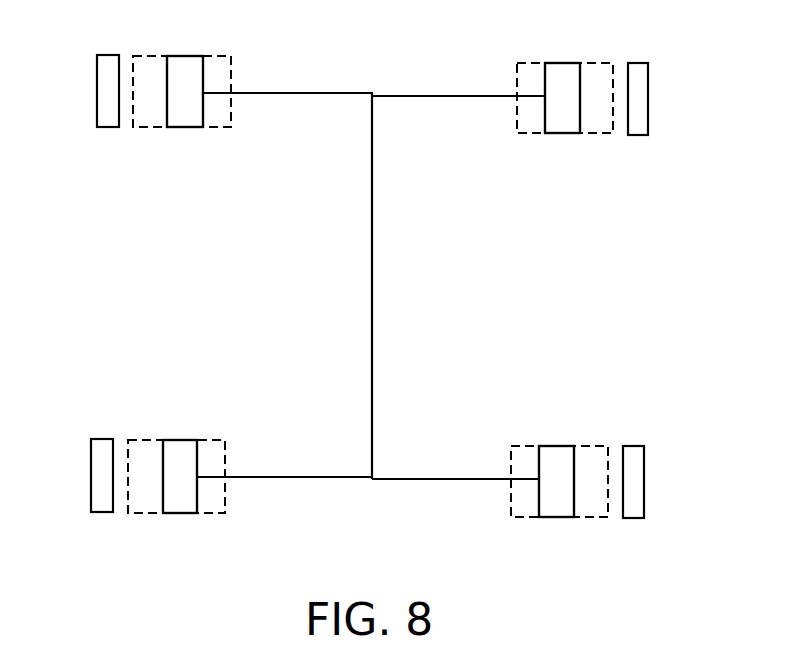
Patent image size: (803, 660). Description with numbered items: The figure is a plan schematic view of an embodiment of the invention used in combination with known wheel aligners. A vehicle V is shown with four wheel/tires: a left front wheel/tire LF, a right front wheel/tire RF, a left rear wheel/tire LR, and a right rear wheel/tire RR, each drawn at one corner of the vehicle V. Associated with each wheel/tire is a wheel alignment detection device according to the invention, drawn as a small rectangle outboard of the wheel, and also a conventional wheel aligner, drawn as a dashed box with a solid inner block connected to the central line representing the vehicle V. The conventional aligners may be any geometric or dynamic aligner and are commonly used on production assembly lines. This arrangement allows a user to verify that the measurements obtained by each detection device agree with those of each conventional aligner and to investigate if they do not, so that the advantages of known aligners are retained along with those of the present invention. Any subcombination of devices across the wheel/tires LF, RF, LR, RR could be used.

The vehicle V is at (372, 322).
The left front wheel/tire LF is at (183, 117).
The right front wheel/tire RF is at (562, 122).
The left rear wheel/tire LR is at (183, 450).
The right rear wheel/tire RR is at (559, 458).